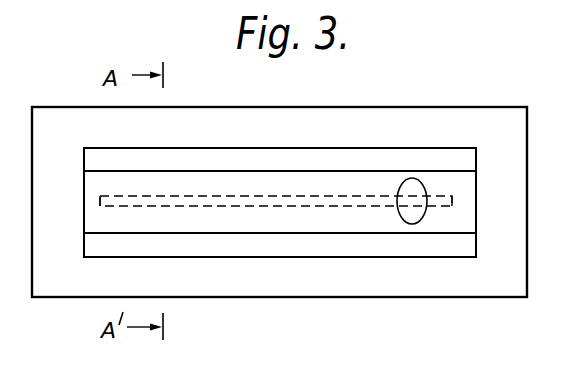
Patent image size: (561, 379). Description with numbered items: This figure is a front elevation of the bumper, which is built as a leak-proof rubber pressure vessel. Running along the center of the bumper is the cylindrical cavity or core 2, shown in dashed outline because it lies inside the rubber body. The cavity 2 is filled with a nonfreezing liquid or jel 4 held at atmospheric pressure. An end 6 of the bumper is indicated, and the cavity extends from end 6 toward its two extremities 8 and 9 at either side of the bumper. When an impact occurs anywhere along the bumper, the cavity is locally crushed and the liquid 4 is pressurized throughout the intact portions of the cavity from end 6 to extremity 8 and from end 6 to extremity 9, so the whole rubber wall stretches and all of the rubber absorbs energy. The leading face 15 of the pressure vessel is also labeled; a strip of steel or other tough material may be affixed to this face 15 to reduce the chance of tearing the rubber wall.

The cylindrical cavity 2 is at (253, 200).
The nonfreezing liquid 4 is at (303, 197).
The end 6 is at (416, 178).
The cavity end 8 is at (93, 187).
The cavity end 9 is at (461, 189).
The leading face 15 is at (305, 234).